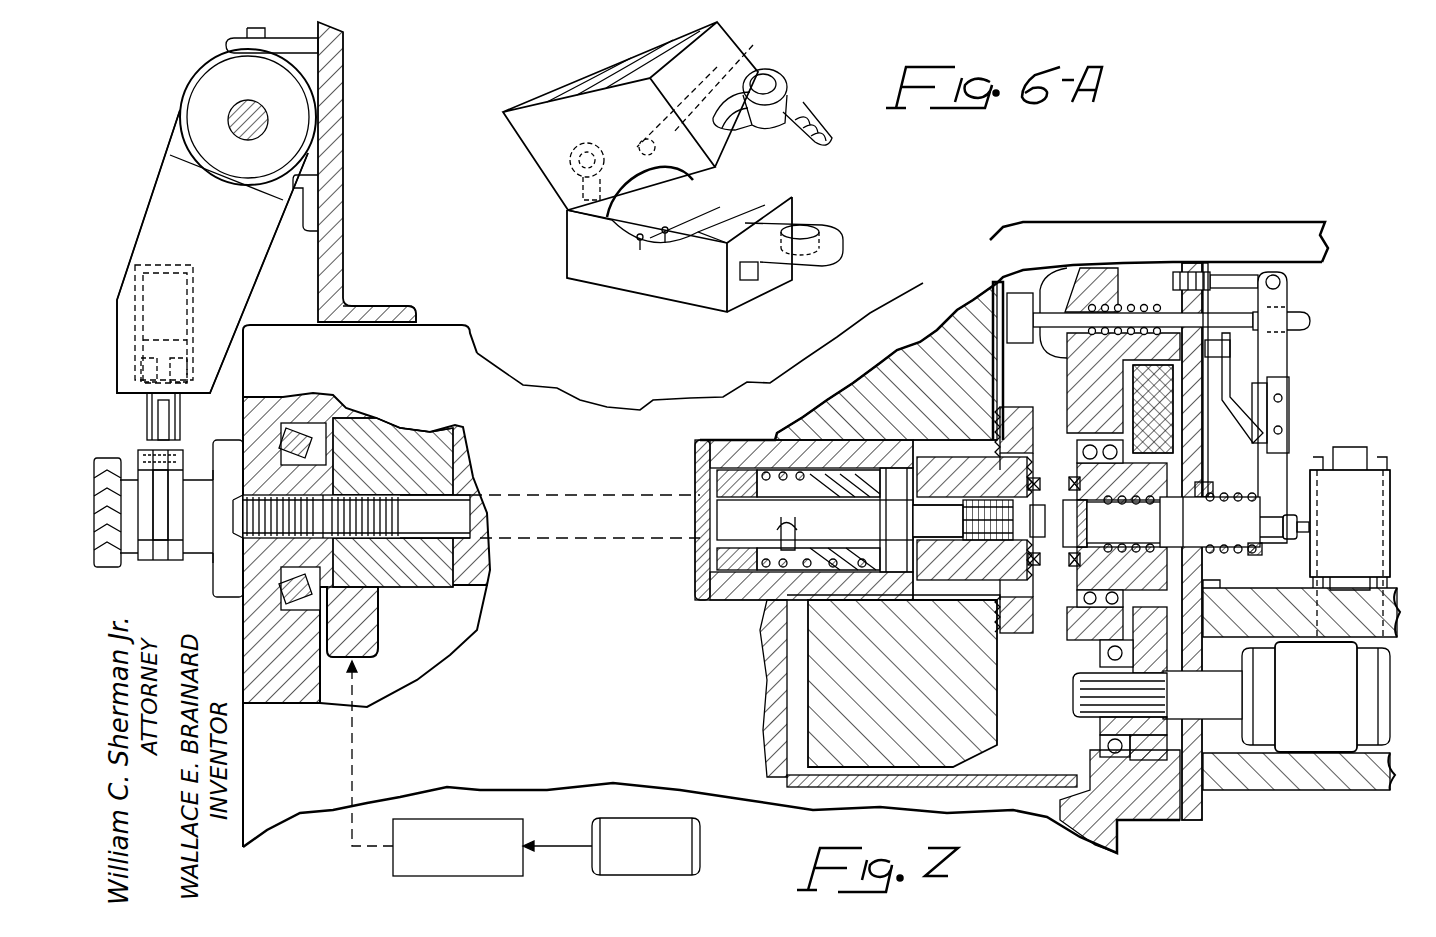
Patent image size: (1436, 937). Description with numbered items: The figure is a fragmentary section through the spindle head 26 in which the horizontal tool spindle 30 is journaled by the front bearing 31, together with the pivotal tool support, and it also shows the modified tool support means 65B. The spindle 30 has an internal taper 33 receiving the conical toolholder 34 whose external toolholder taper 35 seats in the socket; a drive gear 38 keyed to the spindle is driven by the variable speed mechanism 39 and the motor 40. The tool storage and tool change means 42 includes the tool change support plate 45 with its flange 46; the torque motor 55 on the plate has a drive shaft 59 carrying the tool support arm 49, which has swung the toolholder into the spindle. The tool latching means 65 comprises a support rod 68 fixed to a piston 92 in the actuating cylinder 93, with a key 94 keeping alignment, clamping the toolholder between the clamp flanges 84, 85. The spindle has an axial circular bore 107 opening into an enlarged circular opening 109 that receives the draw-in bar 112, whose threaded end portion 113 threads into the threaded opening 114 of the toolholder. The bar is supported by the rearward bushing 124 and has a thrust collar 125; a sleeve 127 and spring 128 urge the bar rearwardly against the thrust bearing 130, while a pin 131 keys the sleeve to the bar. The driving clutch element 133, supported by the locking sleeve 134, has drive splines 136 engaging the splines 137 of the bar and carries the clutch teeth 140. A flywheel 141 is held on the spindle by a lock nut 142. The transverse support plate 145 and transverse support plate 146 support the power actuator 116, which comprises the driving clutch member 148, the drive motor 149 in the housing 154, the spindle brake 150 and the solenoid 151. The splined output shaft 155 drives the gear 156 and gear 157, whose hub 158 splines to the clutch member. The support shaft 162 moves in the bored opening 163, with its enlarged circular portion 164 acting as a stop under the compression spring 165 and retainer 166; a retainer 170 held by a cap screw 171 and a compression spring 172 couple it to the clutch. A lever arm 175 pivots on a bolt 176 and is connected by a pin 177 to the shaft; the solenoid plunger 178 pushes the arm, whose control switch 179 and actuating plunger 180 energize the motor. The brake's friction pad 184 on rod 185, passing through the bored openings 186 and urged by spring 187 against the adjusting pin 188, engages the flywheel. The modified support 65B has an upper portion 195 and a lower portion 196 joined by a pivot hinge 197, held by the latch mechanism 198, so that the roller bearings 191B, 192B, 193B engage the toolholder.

In FIG. 2, the spindle head 26 is at (923, 283).
In FIG. 2, the tool spindle 30 is at (489, 567).
In FIG. 2, the front bearing 31 is at (303, 400).
In FIG. 2, the internal taper 33 is at (380, 586).
In FIG. 2, the toolholder 34 is at (218, 472).
In FIG. 2, the external toolholder taper 35 is at (302, 490).
In FIG. 2, the drive gear 38 is at (378, 620).
In FIG. 2, the variable speed mechanism 39 is at (474, 859).
In FIG. 2, the motor 40 is at (660, 859).
In FIG. 2, the tool storage and tool change means 42 is at (134, 202).
In FIG. 2, the tool change support plate 45 is at (345, 133).
In FIG. 2, the flange 46 is at (362, 308).
In FIG. 2, the tool support arm 49 is at (212, 231).
In FIG. 2, the torque motor 55 is at (302, 75).
In FIG. 2, the drive shaft 59 is at (266, 134).
In FIG. 2, the tool latching means 65 is at (130, 457).
In FIG. 2, the support rod 68 is at (180, 408).
In FIG. 2, the clamp flange 84 is at (207, 549).
In FIG. 2, the clamp flange 85 is at (128, 548).
In FIG. 2, the piston 92 is at (188, 346).
In FIG. 2, the actuating cylinder 93 is at (194, 282).
In FIG. 2, the key 94 is at (160, 420).
In FIG. 2, the axial circular bore 107 is at (463, 527).
In FIG. 2, the enlarged circular opening 109 is at (806, 455).
In FIG. 2, the draw-in bar 112 is at (467, 495).
In FIG. 2, the threaded end portion 113 is at (392, 514).
In FIG. 2, the threaded opening 114 is at (286, 470).
In FIG. 2, the rearward bushing 124 is at (720, 486).
In FIG. 2, the thrust collar 125 is at (897, 518).
In FIG. 2, the sleeve 127 is at (730, 460).
In FIG. 2, the spring 128 is at (830, 437).
In FIG. 2, the thrust bearing 130 is at (892, 600).
In FIG. 2, the pin 131 is at (783, 527).
In FIG. 2, the driving clutch element 133 is at (903, 443).
In FIG. 2, the locking sleeve 134 is at (1047, 575).
In FIG. 2, the drive splines 136 is at (958, 540).
In FIG. 2, the splines 137 is at (1015, 528).
In FIG. 2, the clutch teeth 140 is at (1048, 470).
In FIG. 2, the flywheel 141 is at (837, 743).
In FIG. 2, the lock nut 142 is at (1007, 417).
In FIG. 2, the transverse support plate 145 is at (1100, 354).
In FIG. 2, the transverse support plate 146 is at (1190, 797).
In FIG. 2, the driving clutch member 148 is at (1063, 620).
In FIG. 2, the drive motor 149 is at (1337, 702).
In FIG. 2, the spindle brake 150 is at (1137, 282).
In FIG. 2, the solenoid 151 is at (1367, 530).
In FIG. 2, the housing 154 is at (1233, 632).
In FIG. 2, the splined output shaft 155 is at (1075, 713).
In FIG. 2, the gear 156 is at (1123, 733).
In FIG. 2, the gear 157 is at (1130, 410).
In FIG. 2, the hub 158 is at (1066, 494).
In FIG. 2, the support shaft 162 is at (1240, 532).
In FIG. 2, the bored opening 163 is at (1203, 480).
In FIG. 2, the enlarged circular portion 164 is at (1185, 437).
In FIG. 2, the compression spring 165 is at (1213, 490).
In FIG. 2, the retainer 166 is at (1262, 553).
In FIG. 2, the retainer 170 is at (1064, 531).
In FIG. 2, the cap screw 171 is at (1066, 537).
In FIG. 2, the compression spring 172 is at (1118, 505).
In FIG. 2, the lever arm 175 is at (1288, 352).
In FIG. 2, the bolt 176 is at (1237, 282).
In FIG. 2, the pin 177 is at (1290, 516).
In FIG. 2, the solenoid plunger 178 is at (1308, 530).
In FIG. 2, the control switch 179 is at (1293, 396).
In FIG. 2, the actuating plunger 180 is at (1236, 350).
In FIG. 2, the friction pad 184 is at (993, 282).
In FIG. 2, the rod 185 is at (1173, 293).
In FIG. 2, the bored openings 186 is at (1193, 283).
In FIG. 2, the spring 187 is at (1092, 280).
In FIG. 2, the adjusting pin 188 is at (1305, 312).
In FIG. 2, the power actuator 116 is at (1297, 480).
In FIG. 6A, the roller bearing 191B is at (756, 47).
In FIG. 6A, the roller bearing 192B is at (638, 235).
In FIG. 6A, the roller bearing 193B is at (655, 237).
In FIG. 6A, the upper portion 195 is at (527, 125).
In FIG. 6A, the lower portion 196 is at (585, 252).
In FIG. 6A, the pivot hinge 197 is at (575, 165).
In FIG. 6A, the latch mechanism 198 is at (808, 93).
In FIG. 6A, the tool support means 65B is at (547, 209).